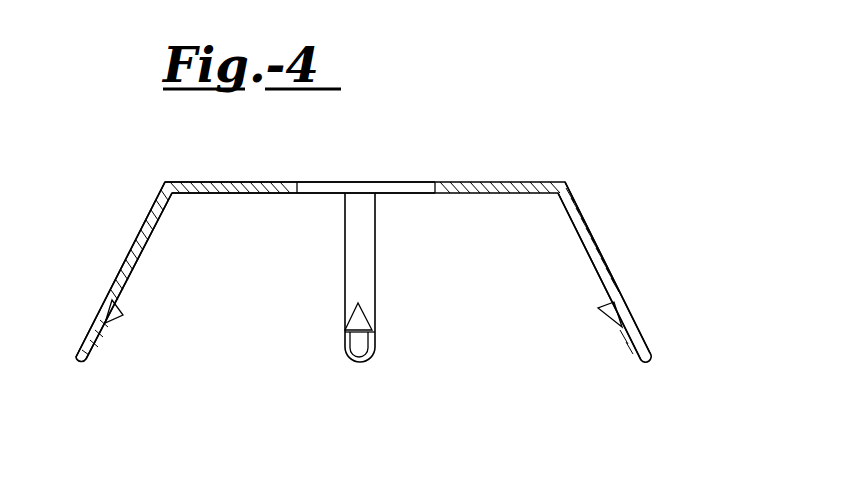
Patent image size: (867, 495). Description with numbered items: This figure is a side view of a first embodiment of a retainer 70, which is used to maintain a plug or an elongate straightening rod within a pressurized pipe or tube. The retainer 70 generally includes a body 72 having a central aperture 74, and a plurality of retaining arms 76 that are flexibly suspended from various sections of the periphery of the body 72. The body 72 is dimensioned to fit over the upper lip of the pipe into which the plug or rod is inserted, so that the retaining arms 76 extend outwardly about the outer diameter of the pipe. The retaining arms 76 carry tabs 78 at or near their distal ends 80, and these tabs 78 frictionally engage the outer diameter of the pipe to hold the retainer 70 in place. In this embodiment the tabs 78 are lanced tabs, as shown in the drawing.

The retainer 70 is at (572, 147).
The body 72 is at (203, 182).
The central aperture 74 is at (433, 190).
The retaining arms 76 is at (602, 248).
The tabs 78 is at (365, 313).
The distal ends 80 is at (355, 365).